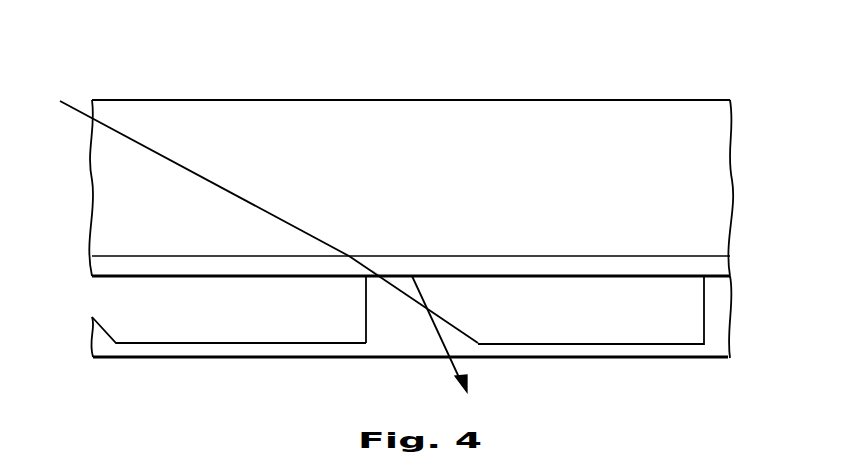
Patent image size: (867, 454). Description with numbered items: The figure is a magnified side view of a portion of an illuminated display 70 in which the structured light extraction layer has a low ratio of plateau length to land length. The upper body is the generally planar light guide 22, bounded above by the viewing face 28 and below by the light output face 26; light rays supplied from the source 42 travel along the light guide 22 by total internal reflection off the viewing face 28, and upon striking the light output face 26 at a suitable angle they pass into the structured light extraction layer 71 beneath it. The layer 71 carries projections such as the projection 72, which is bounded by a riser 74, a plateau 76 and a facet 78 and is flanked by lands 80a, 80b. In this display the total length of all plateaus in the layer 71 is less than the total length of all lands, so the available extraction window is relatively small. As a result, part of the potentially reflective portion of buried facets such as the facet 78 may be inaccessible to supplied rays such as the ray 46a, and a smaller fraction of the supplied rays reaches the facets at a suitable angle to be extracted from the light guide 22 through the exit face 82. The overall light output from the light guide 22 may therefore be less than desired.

The illuminated display 70 is at (588, 76).
The light guide 22 is at (697, 170).
The viewing face 28 is at (199, 101).
The light output face 26 is at (137, 256).
The source 42 is at (715, 265).
The supplied light ray 46a is at (397, 281).
The plateau 76 is at (385, 276).
The facet 78 is at (461, 326).
The structured light extraction layer 71 is at (713, 348).
The projection 72 is at (420, 333).
The riser 74 is at (367, 318).
The land 80a is at (352, 342).
The land 80b is at (580, 343).
The exit face 82 is at (248, 358).